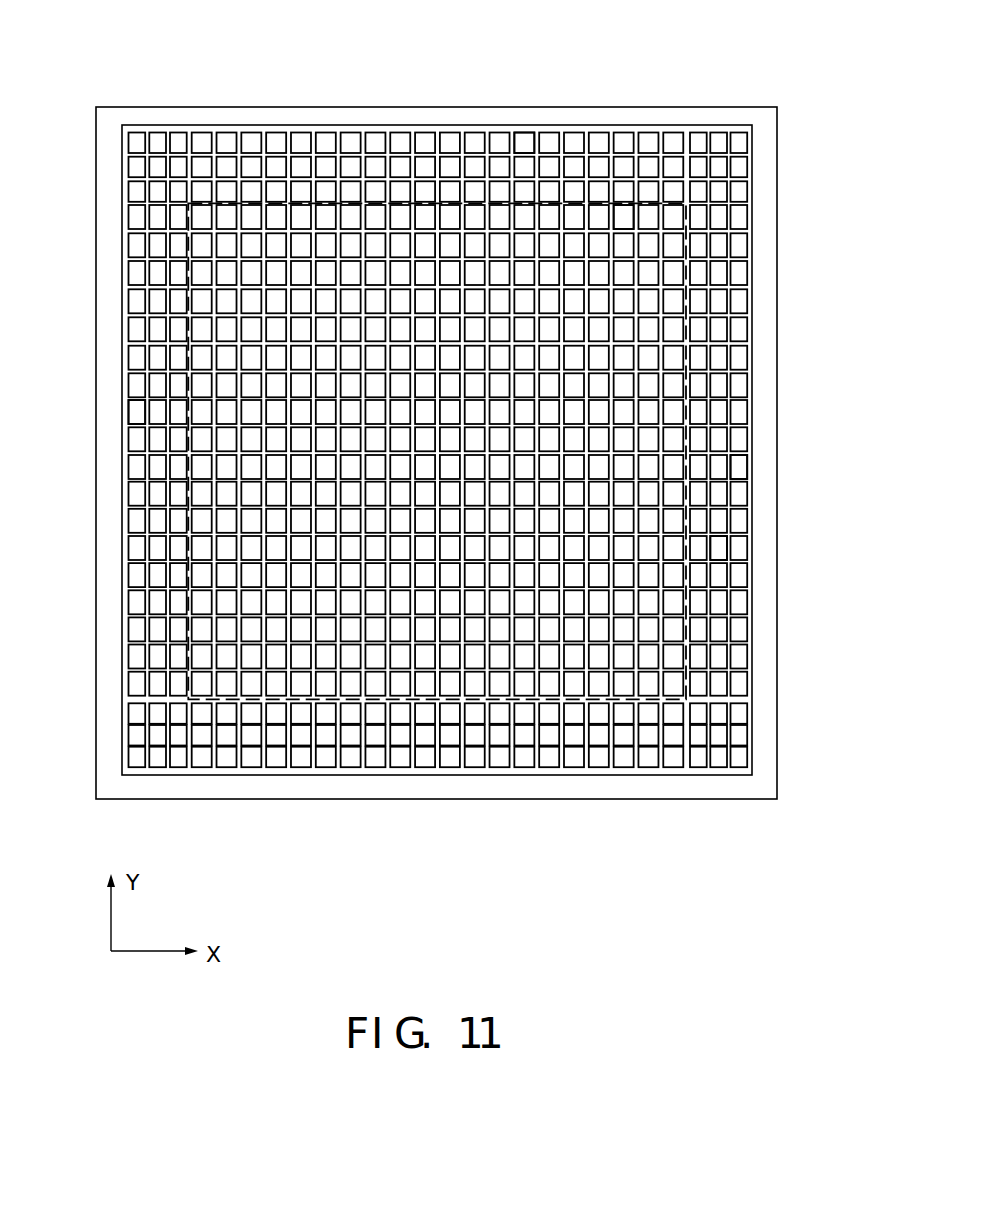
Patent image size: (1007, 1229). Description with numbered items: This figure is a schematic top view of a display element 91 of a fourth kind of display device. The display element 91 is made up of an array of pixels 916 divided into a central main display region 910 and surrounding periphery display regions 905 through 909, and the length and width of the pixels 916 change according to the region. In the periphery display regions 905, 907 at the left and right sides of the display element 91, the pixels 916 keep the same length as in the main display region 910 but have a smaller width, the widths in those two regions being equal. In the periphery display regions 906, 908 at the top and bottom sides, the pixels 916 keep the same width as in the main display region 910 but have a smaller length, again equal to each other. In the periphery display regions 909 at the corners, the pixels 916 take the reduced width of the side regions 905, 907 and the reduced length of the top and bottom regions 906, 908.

The display element 91 is at (273, 50).
The periphery display region 905 is at (740, 465).
The periphery display region 906 is at (413, 762).
The periphery display region 907 is at (132, 407).
The periphery display region 908 is at (537, 153).
The periphery display region 909 is at (742, 145).
The main display region 910 is at (686, 390).
The pixel 916 is at (625, 218).